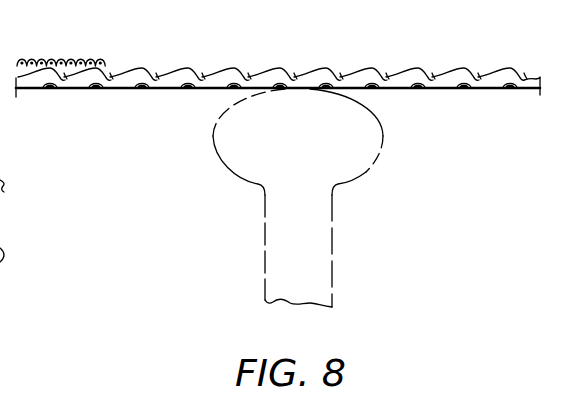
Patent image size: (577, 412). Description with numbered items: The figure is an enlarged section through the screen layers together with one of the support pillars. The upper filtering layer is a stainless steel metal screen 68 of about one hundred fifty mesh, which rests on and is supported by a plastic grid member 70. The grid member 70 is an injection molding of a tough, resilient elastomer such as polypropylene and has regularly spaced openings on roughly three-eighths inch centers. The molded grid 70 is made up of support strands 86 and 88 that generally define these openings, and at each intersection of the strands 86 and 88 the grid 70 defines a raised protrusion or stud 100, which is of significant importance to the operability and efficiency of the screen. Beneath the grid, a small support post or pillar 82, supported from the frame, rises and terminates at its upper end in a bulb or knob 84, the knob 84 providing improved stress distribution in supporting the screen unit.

The stainless steel metal screen 68 is at (71, 57).
The grid member 70 is at (77, 84).
The pillar 82 is at (334, 228).
The bulb or knob 84 is at (377, 114).
The support strand 86 is at (220, 76).
The support strand 88 is at (191, 90).
The raised protrusion or stud 100 is at (332, 75).